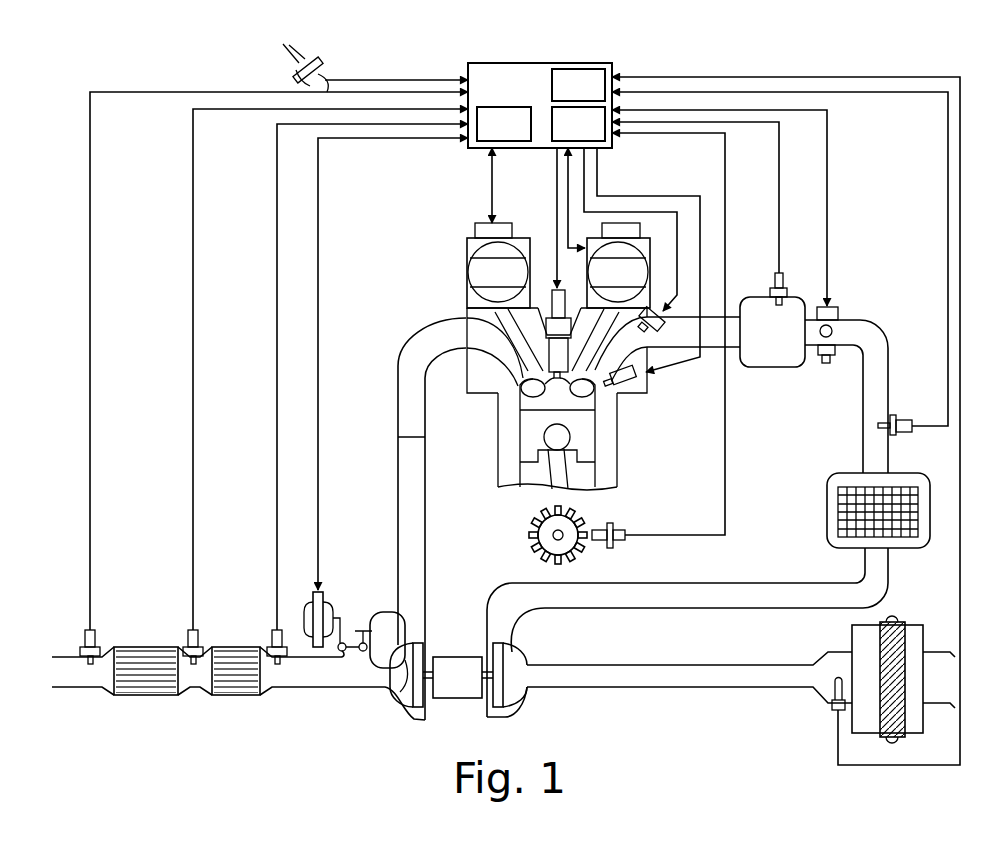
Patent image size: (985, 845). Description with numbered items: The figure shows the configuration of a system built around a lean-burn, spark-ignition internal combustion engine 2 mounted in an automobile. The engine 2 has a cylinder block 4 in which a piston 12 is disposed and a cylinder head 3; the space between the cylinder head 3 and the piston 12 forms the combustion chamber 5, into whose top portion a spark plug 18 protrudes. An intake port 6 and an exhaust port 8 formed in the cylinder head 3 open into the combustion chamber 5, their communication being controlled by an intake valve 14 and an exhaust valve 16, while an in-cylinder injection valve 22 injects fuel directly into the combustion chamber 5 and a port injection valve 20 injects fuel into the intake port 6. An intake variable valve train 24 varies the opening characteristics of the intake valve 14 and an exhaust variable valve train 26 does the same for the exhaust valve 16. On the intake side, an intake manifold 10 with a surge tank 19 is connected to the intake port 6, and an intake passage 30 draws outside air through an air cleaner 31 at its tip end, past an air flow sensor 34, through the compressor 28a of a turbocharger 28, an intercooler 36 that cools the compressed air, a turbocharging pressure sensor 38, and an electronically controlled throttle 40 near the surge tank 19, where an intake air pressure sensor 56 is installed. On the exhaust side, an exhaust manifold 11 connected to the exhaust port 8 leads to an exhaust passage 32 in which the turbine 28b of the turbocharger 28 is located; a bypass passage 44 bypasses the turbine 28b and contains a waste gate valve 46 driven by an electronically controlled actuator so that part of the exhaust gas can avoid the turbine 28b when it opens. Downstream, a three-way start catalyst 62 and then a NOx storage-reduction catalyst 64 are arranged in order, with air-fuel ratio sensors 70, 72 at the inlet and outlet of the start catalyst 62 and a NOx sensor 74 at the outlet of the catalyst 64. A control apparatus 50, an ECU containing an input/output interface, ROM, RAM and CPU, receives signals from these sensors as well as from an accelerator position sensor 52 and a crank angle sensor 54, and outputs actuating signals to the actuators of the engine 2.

The internal combustion engine 2 is at (447, 250).
The cylinder head 3 is at (467, 386).
The cylinder block 4 is at (498, 479).
The combustion chamber 5 is at (575, 431).
The intake port 6 is at (640, 378).
The exhaust port 8 is at (498, 345).
The intake manifold 10 is at (707, 338).
The exhaust manifold 11 is at (399, 353).
The piston 12 is at (525, 448).
The intake valve 14 is at (557, 388).
The exhaust valve 16 is at (533, 397).
The spark plug 18 is at (548, 300).
The surge tank 19 is at (765, 368).
The port injection valve 20 is at (668, 318).
The in-cylinder injection valve 22 is at (630, 385).
The intake variable valve train 24 is at (642, 233).
The exhaust variable valve train 26 is at (467, 266).
The turbocharger 28 is at (458, 654).
The compressor 28a is at (510, 660).
The turbine 28b is at (400, 689).
The intake passage 30 is at (890, 385).
The air cleaner 31 is at (892, 619).
The exhaust passage 32 is at (398, 453).
The air flow sensor 34 is at (831, 707).
The intercooler 36 is at (827, 521).
The turbocharging pressure sensor 38 is at (905, 433).
The electronically controlled throttle 40 is at (836, 318).
The bypass passage 44 is at (378, 613).
The waste gate valve 46 is at (340, 627).
The control apparatus 50 is at (606, 63).
The accelerator position sensor 52 is at (322, 63).
The crank angle sensor 54 is at (628, 535).
The intake air pressure sensor 56 is at (785, 285).
The start catalyst 62 is at (233, 647).
The NOx storage-reduction catalyst 64 is at (146, 647).
The air-fuel ratio sensor 70 is at (274, 630).
The air-fuel ratio sensor 72 is at (190, 630).
The NOx sensor 74 is at (85, 634).